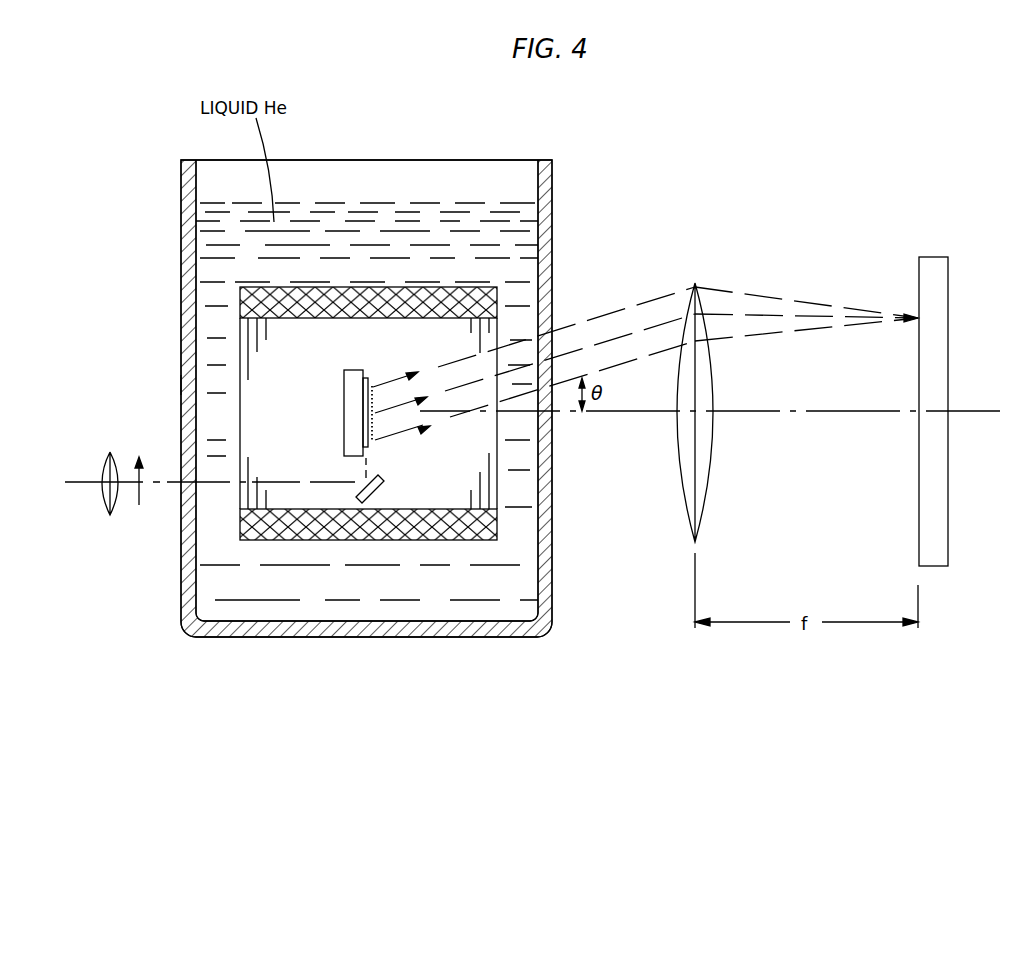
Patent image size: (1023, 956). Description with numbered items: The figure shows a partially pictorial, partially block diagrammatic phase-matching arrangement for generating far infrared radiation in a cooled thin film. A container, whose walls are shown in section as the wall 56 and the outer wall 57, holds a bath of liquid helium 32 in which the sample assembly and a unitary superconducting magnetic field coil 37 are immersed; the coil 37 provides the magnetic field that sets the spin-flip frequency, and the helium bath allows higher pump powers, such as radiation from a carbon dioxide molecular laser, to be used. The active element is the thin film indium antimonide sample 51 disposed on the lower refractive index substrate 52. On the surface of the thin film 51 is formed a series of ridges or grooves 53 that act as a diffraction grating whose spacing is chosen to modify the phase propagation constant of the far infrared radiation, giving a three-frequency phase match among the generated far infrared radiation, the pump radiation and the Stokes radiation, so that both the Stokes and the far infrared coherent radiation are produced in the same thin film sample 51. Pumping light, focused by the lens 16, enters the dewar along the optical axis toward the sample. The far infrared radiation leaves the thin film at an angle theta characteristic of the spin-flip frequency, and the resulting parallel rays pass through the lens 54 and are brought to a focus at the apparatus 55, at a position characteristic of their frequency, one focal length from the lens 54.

The lens 16 is at (107, 463).
The bath of liquid helium 32 is at (343, 205).
The superconducting magnetic field coil 37 is at (497, 303).
The thin film indium antimonide sample 51 is at (367, 379).
The substrate 52 is at (352, 371).
The ridges or grooves 53 is at (374, 432).
The collecting lens 54 is at (700, 521).
The apparatus 55 is at (934, 257).
The dewar wall 56 is at (181, 386).
The dewar 57 is at (553, 455).